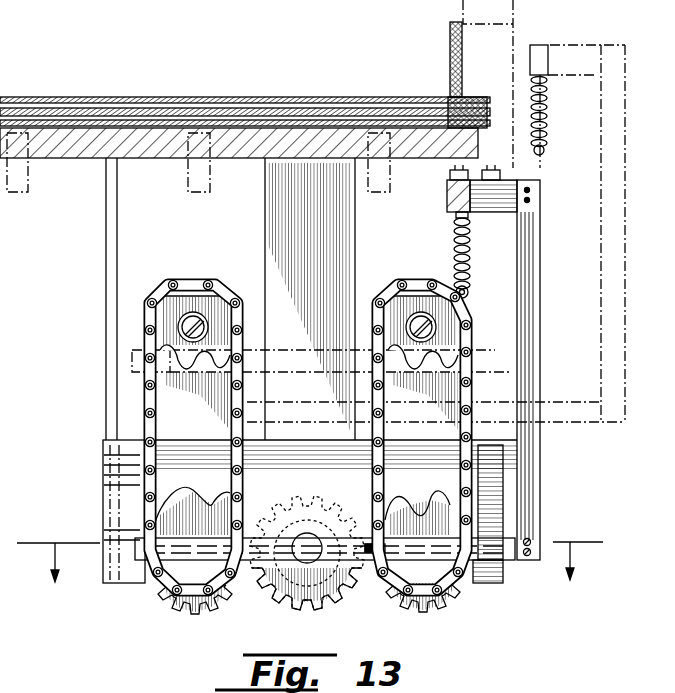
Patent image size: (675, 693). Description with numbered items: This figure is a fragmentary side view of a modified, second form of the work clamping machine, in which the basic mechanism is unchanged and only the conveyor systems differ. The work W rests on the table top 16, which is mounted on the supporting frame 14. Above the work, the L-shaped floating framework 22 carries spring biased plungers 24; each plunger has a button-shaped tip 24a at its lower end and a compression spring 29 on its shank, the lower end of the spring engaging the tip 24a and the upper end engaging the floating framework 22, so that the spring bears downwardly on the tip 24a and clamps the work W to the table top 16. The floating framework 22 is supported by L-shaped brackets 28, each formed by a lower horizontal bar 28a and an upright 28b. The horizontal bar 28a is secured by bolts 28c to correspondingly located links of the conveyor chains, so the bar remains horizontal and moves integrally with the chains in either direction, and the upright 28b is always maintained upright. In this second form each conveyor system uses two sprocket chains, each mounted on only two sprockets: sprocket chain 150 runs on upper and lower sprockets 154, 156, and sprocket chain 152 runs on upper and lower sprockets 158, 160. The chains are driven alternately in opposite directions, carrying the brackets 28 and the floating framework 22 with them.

The work W is at (260, 118).
The supporting frame 14 is at (310, 566).
The table top 16 is at (80, 157).
The floating framework 22 is at (449, 192).
The spring biased plunger 24 is at (455, 228).
The button-shaped tip 24a is at (465, 288).
The bracket 28 is at (334, 408).
The lower horizontal bar 28a is at (497, 550).
The upright 28b is at (541, 330).
The bolt 28c is at (150, 552).
The compression spring 29 is at (477, 246).
The sprocket chain 150 is at (146, 378).
The sprocket chain 152 is at (470, 400).
The upper sprocket 154 is at (213, 283).
The lower sprocket 156 is at (160, 506).
The upper sprocket 158 is at (428, 283).
The lower sprocket 160 is at (472, 524).